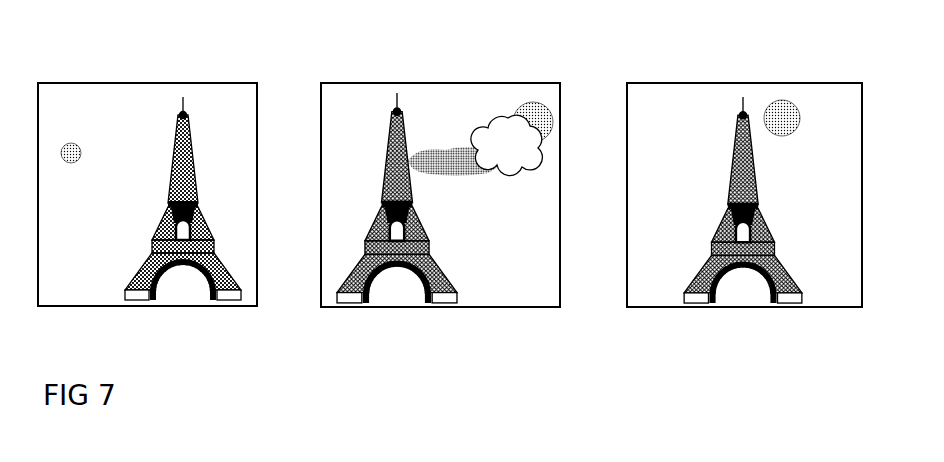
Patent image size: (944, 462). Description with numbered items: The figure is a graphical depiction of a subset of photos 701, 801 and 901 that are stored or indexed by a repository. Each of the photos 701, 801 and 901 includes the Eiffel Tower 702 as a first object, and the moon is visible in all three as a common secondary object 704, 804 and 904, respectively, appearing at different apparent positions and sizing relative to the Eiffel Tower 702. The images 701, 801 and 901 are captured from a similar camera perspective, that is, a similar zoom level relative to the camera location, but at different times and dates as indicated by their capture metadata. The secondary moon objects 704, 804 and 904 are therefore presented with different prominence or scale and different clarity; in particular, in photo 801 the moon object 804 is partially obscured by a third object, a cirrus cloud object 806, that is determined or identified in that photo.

The photo 701 is at (194, 314).
The Eiffel Tower 702 is at (143, 270).
The secondary moon object 704 is at (76, 164).
The photo 801 is at (499, 315).
The secondary moon object 804 is at (521, 110).
The cirrus cloud object 806 is at (503, 170).
The photo 901 is at (795, 317).
The secondary moon object 904 is at (780, 130).